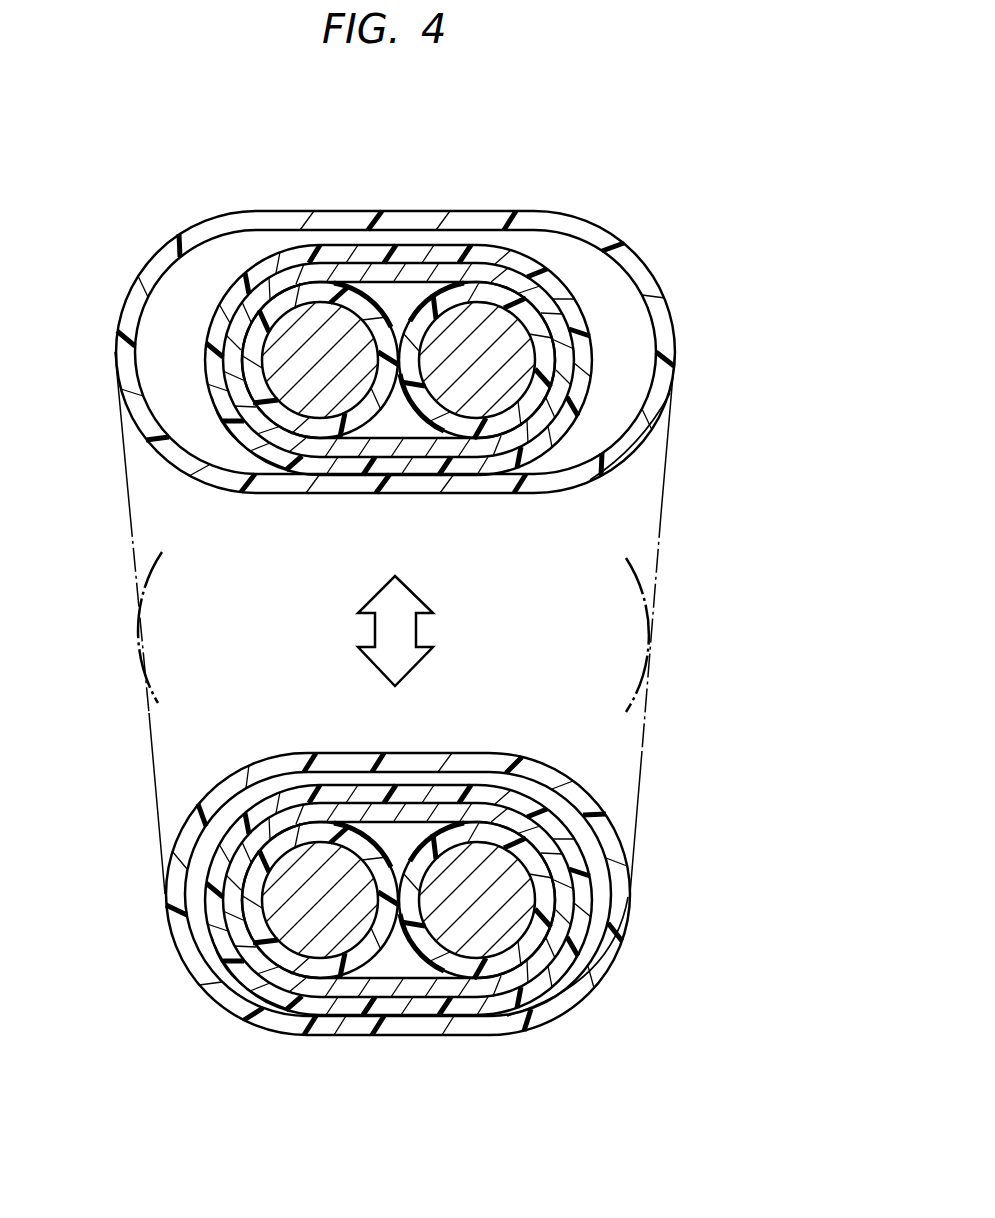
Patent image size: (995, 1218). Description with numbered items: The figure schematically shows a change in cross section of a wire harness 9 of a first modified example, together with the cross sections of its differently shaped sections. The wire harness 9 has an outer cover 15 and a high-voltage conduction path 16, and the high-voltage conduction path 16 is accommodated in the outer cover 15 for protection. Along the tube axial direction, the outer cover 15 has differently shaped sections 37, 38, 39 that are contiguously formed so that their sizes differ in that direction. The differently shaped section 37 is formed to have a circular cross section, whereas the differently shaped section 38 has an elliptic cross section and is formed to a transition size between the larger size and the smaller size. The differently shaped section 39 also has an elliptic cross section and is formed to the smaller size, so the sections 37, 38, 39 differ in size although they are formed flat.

The wire harness 9 is at (425, 566).
The outer cover 15 is at (647, 260).
The high-voltage conduction path 16 is at (539, 260).
The differently shaped section 37 is at (176, 476).
The differently shaped section 38 is at (152, 567).
The differently shaped section 39 is at (201, 787).